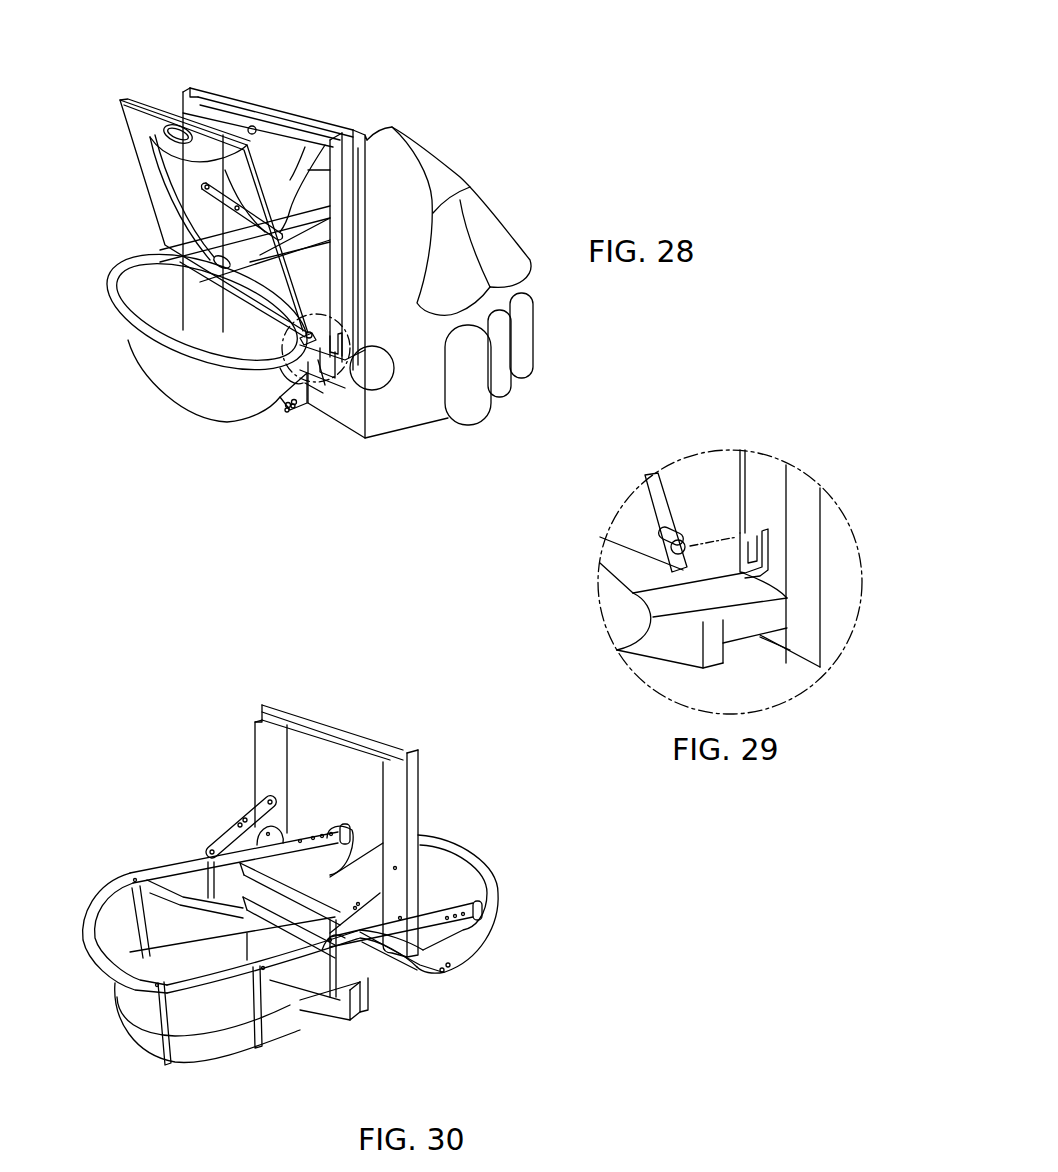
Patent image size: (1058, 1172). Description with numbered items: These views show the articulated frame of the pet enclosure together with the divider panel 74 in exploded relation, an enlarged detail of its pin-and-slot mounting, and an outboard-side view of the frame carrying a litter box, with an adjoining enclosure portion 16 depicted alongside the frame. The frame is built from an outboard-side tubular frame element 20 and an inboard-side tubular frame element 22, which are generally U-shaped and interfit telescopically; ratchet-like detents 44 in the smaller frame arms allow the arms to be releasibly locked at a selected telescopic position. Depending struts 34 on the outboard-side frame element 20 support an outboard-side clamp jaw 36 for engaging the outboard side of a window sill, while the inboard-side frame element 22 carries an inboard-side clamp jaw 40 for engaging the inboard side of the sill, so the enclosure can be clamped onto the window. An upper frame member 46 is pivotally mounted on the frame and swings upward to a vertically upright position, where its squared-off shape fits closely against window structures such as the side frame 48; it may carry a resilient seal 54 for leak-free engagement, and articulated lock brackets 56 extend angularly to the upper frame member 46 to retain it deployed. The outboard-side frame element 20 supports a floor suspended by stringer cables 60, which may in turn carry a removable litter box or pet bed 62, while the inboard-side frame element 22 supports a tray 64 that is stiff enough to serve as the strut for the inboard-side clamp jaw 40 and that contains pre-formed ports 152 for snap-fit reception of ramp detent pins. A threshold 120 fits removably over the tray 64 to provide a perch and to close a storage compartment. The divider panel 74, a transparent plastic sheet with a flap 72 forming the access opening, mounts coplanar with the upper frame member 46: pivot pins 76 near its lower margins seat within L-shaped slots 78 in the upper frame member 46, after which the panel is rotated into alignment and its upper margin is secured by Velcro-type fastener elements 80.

In FIG. 28, the housing body 16 is at (458, 175).
In FIG. 30, the outboard-side U-shaped tubular frame element 20 is at (83, 935).
In FIG. 30, the inboard-side tubular frame element 22 is at (468, 858).
In FIG. 30, the depending struts 34 is at (135, 880).
In FIG. 30, the outboard-side clamp jaw 36 is at (367, 1000).
In FIG. 30, the inboard-side clamp jaw 40 is at (413, 963).
In FIG. 30, the ratchet-like detents 44 is at (323, 828).
In FIG. 29, the upper frame member 46 is at (808, 527).
In FIG. 28, the side frame 48 is at (358, 152).
In FIG. 28, the resilient seal 54 is at (305, 115).
In FIG. 30, the articulated lock brackets 56 is at (230, 832).
In FIG. 30, the stringer cables 60 is at (257, 1012).
In FIG. 30, the litter box or pet bed 62 is at (140, 1017).
In FIG. 28, the tray 64 is at (180, 397).
In FIG. 28, the flap 72 is at (168, 183).
In FIG. 28, the divider panel 74 is at (133, 143).
In FIG. 29, the divider panel 74 is at (642, 502).
In FIG. 28, the pivot pins 76 is at (305, 340).
In FIG. 29, the pivot pins 76 is at (678, 545).
In FIG. 28, the L-shaped slots 78 is at (338, 367).
In FIG. 29, the L-shaped slots 78 is at (772, 570).
In FIG. 28, the Velcro-type fastener elements 80 is at (183, 133).
In FIG. 28, the threshold 120 is at (135, 292).
In FIG. 28, the pre-formed ports 152 is at (293, 408).